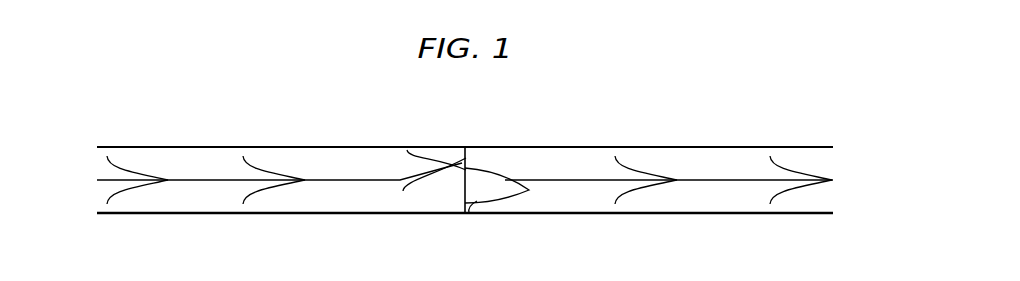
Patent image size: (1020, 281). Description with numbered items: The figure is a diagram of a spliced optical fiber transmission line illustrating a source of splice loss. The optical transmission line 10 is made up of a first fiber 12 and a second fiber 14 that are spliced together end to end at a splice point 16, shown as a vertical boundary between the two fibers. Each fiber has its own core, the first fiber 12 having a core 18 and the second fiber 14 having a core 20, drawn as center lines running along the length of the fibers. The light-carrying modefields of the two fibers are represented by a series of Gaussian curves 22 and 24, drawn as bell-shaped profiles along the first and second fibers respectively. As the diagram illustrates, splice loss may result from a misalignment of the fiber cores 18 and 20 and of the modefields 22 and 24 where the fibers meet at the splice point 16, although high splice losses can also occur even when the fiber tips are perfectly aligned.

The optical transmission line 10 is at (762, 105).
The first fiber 12 is at (192, 147).
The second fiber 14 is at (660, 147).
The splice point 16 is at (465, 147).
The core 18 is at (338, 180).
The core 20 is at (707, 180).
The modefield (Gaussian curves) 22 is at (272, 187).
The modefield (Gaussian curves) 24 is at (795, 192).